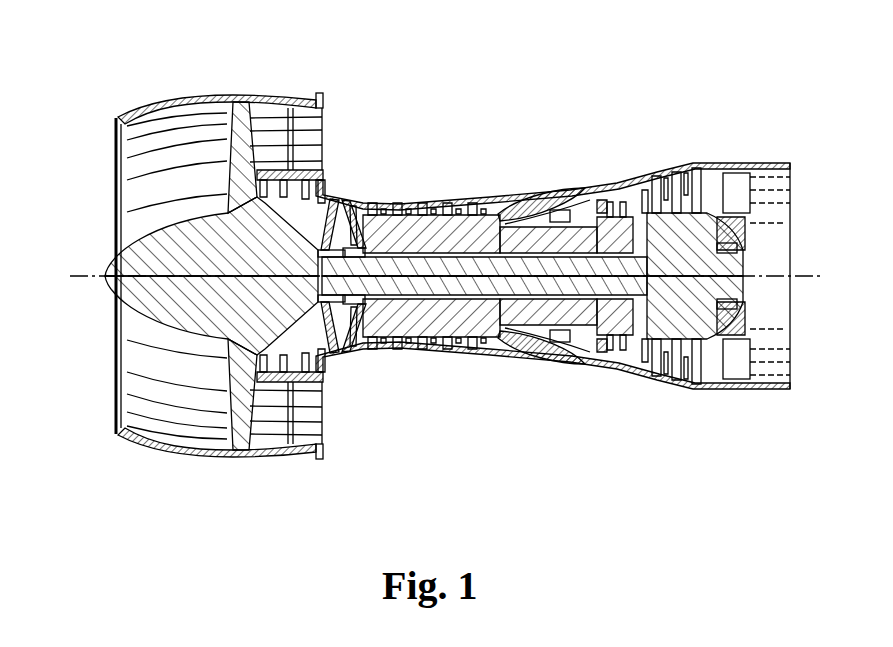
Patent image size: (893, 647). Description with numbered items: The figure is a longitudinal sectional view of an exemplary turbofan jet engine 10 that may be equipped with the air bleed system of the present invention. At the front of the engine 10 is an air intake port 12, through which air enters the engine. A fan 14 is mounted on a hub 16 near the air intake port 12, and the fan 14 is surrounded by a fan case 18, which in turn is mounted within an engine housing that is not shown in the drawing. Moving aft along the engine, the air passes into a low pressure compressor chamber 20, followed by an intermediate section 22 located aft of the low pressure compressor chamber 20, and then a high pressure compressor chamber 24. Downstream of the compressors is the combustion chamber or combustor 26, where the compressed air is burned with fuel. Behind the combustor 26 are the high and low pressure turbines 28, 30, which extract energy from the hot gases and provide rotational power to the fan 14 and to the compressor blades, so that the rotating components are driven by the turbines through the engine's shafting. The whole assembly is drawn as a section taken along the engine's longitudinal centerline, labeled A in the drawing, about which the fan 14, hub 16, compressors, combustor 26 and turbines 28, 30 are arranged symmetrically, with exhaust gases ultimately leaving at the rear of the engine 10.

The turbofan jet engine 10 is at (766, 57).
The air intake port 12 is at (93, 175).
The fan 14 is at (197, 376).
The hub 16 is at (110, 263).
The fan case 18 is at (232, 92).
The low pressure compressor chamber 20 is at (325, 467).
The intermediate section 22 is at (357, 367).
The high pressure compressor chamber 24 is at (498, 367).
The combustion chamber 26 is at (597, 367).
The high pressure turbine 28 is at (647, 367).
The low pressure turbine 30 is at (718, 380).
The engine centerline axis A is at (80, 278).